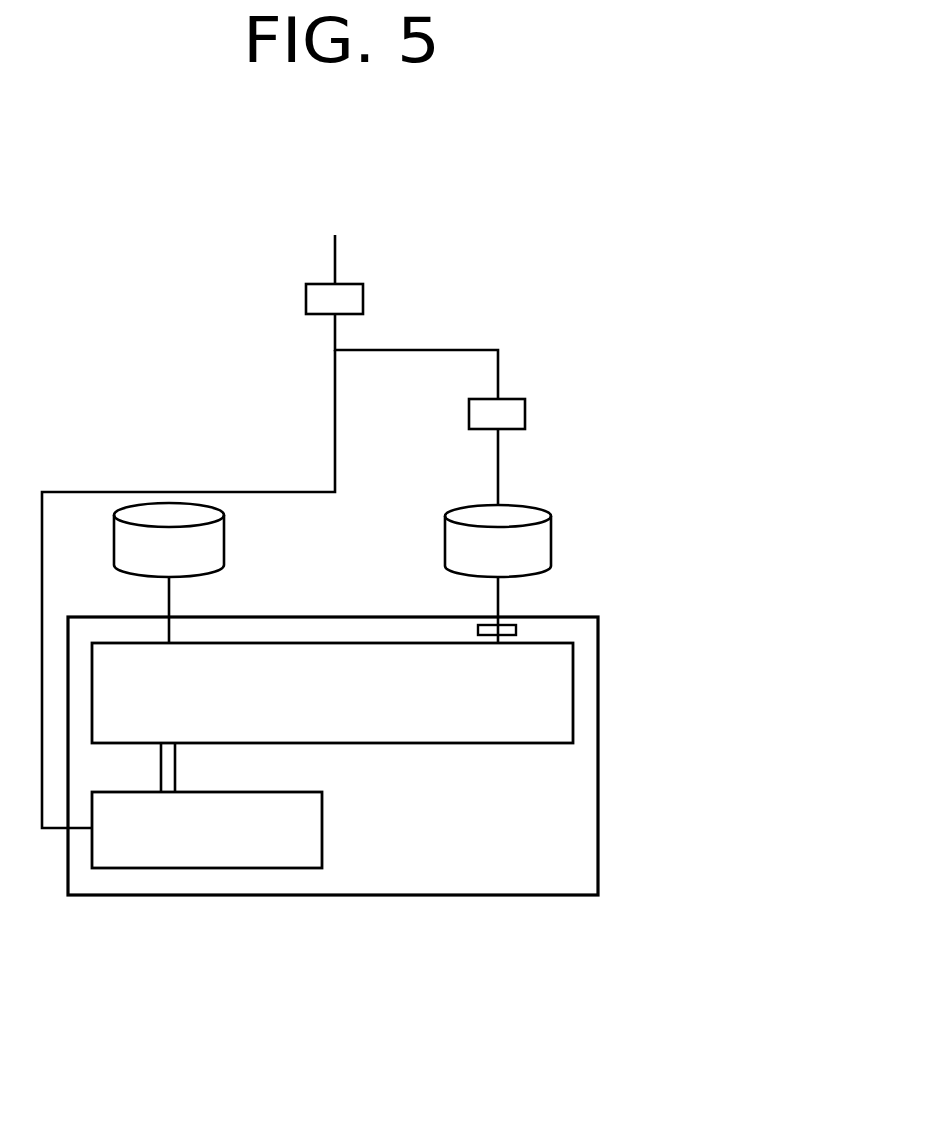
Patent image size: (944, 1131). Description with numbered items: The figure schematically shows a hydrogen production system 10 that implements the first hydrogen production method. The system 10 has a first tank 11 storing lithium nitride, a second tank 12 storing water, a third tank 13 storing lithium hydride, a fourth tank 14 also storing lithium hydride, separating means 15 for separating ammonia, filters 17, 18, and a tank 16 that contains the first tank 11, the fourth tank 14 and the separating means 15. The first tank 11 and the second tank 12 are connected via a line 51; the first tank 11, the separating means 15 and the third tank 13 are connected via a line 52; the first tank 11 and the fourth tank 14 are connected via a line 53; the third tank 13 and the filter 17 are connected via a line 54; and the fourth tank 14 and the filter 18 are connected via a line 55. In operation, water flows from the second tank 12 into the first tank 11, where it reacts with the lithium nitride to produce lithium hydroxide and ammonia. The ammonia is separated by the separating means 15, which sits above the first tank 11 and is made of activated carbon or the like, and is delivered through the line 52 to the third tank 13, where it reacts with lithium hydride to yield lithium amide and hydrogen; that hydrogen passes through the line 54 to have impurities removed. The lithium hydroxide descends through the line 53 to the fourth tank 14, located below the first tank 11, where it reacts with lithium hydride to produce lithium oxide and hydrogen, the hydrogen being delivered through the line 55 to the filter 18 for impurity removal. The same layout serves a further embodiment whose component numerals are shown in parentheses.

The hydrogen production system 10 is at (392, 135).
The first tank 11 is at (565, 690).
The second tank 12 is at (215, 538).
The third tank 13 is at (543, 540).
The fourth tank 14 is at (207, 850).
The separating means 15 is at (516, 630).
The tank 16 is at (598, 765).
The filter 17 is at (525, 414).
The filter 18 is at (363, 300).
The line 51 is at (169, 593).
The line 52 is at (498, 595).
The line 53 is at (176, 762).
The line 54 is at (498, 455).
The line 55 is at (336, 257).